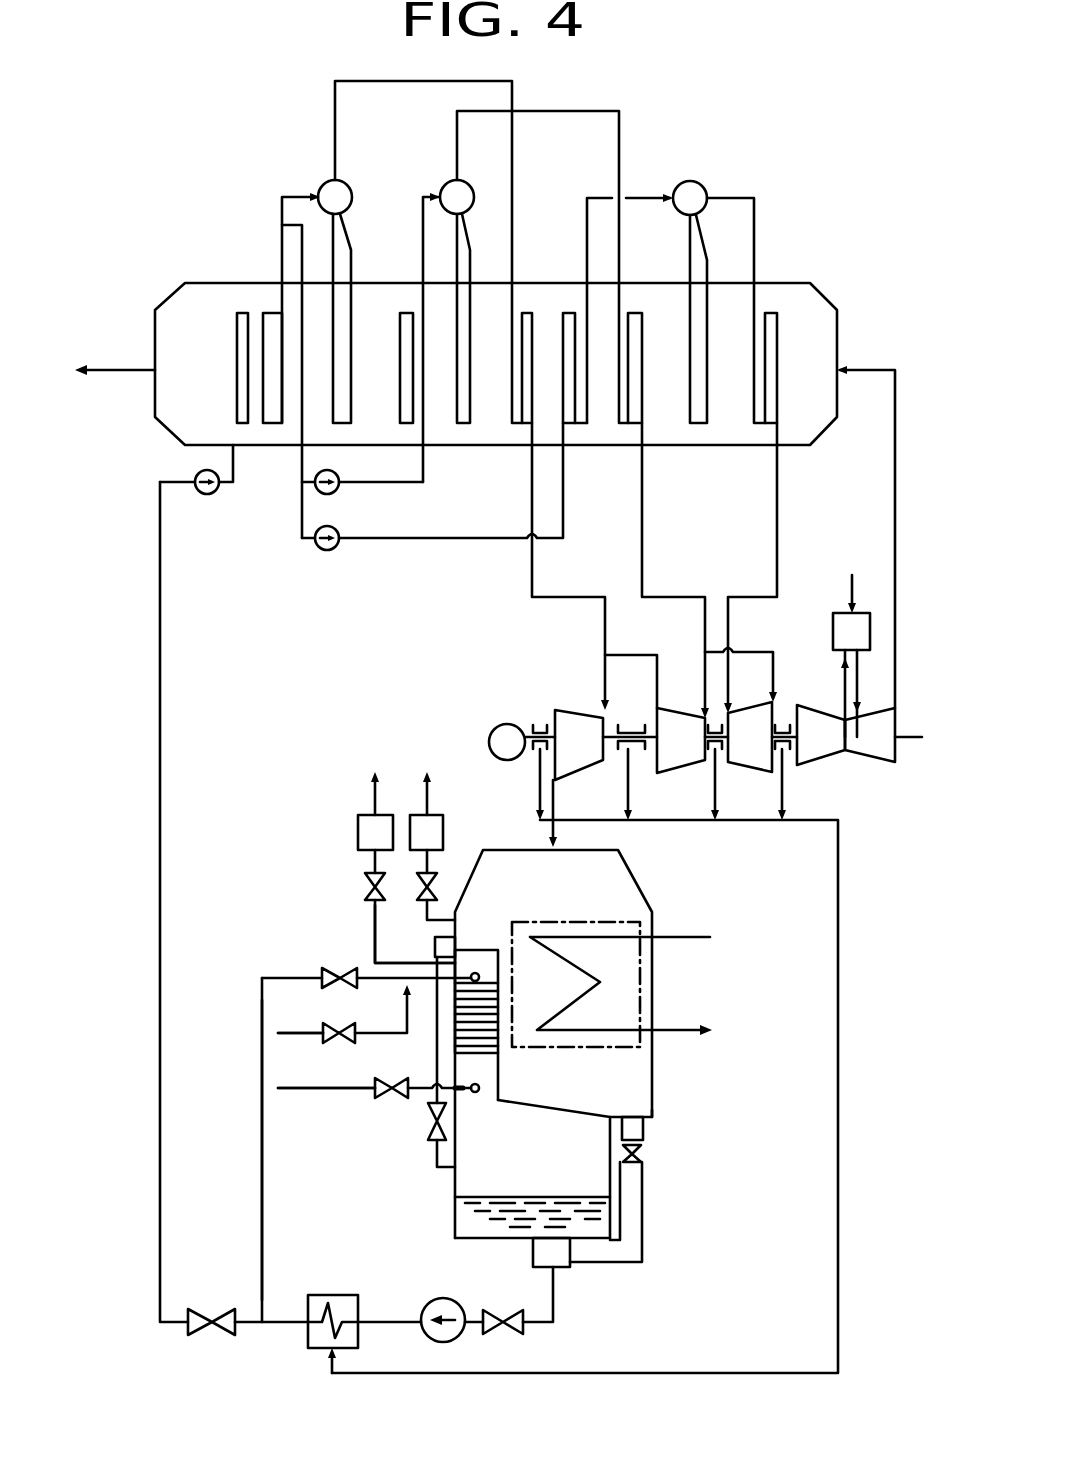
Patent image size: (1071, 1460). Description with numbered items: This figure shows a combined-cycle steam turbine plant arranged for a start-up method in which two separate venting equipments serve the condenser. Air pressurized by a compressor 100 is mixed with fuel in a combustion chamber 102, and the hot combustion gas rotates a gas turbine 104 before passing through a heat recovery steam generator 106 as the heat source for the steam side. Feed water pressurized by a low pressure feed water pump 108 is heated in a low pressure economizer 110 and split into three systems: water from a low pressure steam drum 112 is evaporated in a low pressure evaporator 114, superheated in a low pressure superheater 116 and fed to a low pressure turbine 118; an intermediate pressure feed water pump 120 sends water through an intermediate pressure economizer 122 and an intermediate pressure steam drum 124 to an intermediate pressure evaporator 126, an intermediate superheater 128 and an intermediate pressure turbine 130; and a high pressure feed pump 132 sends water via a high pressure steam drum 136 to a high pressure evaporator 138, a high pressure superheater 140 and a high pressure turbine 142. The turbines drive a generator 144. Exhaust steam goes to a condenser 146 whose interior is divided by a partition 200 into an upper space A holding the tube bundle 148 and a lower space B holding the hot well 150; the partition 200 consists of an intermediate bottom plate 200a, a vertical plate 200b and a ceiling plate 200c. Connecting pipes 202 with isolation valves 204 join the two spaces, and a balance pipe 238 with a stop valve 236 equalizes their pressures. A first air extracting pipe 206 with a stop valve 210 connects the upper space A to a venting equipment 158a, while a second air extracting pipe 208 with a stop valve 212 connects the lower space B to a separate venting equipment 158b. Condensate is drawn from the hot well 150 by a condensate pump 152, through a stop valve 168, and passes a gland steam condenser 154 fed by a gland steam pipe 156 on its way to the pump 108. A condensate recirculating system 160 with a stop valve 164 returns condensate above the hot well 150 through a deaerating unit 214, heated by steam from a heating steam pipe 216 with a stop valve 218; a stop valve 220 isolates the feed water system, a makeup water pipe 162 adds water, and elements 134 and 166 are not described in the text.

The compressor 100 is at (820, 766).
The combustion chamber 102 is at (833, 636).
The gas turbine 104 is at (875, 764).
The heat recovery steam generator 106 is at (848, 330).
The low pressure feed water pump 108 is at (207, 495).
The low pressure economizer 110 is at (240, 312).
The low pressure steam drum 112 is at (322, 186).
The low pressure evaporator 114 is at (352, 312).
The low pressure superheater 116 is at (527, 312).
The low pressure turbine 118 is at (580, 774).
The intermediate pressure feed water pump 120 is at (333, 495).
The intermediate pressure economizer 122 is at (410, 426).
The intermediate pressure steam drum 124 is at (444, 186).
The intermediate pressure evaporator 126 is at (468, 426).
The intermediate superheater 128 is at (635, 426).
The intermediate pressure turbine 130 is at (682, 773).
The high pressure feed pump 132 is at (333, 551).
The preheater tubes 134 is at (568, 312).
The high pressure steam drum 136 is at (690, 181).
The high pressure evaporator 138 is at (700, 426).
The high pressure superheater 140 is at (770, 426).
The high pressure turbine 142 is at (745, 766).
The generator 144 is at (508, 762).
The condenser 146 is at (640, 874).
The tube bundle 148 is at (640, 970).
The hot well 150 is at (488, 1225).
The condensate pump 152 is at (437, 1340).
The gland steam condenser 154 is at (307, 1328).
The gland steam pipe 156 is at (840, 1045).
The venting equipment 158a is at (437, 812).
The venting equipment 158b is at (358, 828).
The condensate recirculating system 160 is at (264, 1256).
The makeup water pipe 162 is at (300, 1036).
The stop valve 164 is at (324, 975).
The valve 166 is at (338, 1028).
The stop valve 168 is at (510, 1330).
The partition 200 is at (546, 1099).
The intermediate bottom plate 200a is at (650, 1110).
The vertical plate 200b is at (498, 1058).
The ceiling plate 200c is at (470, 950).
The connecting pipe 202 is at (643, 1225).
The isolation valve 204 is at (643, 1132).
The first air extracting pipe 206 is at (419, 942).
The second air extracting pipe 208 is at (373, 925).
The stop valve 210 is at (438, 882).
The stop valve 212 is at (365, 886).
The deaerating unit 214 is at (452, 1008).
The heating steam pipe 216 is at (303, 1096).
The stop valve 218 is at (382, 1100).
The stop valve 220 is at (203, 1337).
The stop valve 236 is at (428, 1122).
The balance pipe 238 is at (436, 1150).
The upper space A is at (628, 907).
The lower space B is at (473, 1180).